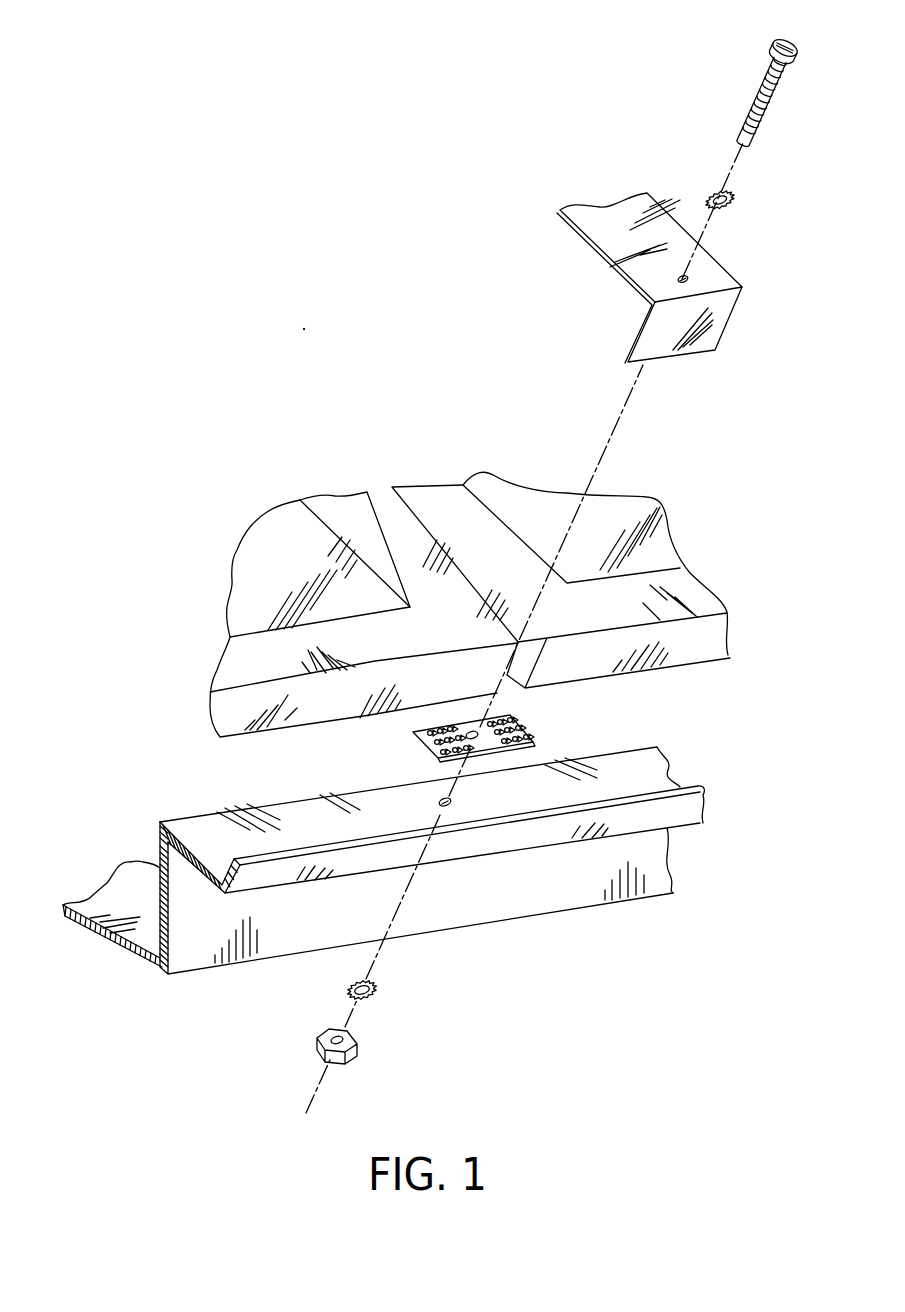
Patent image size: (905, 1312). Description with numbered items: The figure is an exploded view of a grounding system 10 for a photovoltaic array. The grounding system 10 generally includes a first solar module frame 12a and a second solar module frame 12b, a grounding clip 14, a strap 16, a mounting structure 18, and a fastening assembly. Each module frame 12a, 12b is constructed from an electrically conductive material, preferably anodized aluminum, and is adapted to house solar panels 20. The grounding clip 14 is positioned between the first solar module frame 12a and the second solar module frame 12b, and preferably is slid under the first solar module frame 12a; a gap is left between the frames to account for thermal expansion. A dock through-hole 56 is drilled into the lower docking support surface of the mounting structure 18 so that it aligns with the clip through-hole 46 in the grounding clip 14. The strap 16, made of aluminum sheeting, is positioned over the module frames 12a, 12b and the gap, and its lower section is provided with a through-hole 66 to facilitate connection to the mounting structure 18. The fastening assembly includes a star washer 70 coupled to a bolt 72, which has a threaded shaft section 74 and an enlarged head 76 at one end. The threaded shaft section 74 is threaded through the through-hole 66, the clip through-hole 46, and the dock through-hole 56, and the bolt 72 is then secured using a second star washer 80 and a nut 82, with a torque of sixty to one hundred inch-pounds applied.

The grounding system 10 is at (300, 322).
The first solar module frame 12a is at (247, 665).
The second solar module frame 12b is at (705, 640).
The grounding clip 14 is at (527, 718).
The strap 16 is at (708, 272).
The mounting structure 18 is at (132, 888).
The solar panels 20 is at (253, 567).
The clip through-hole 46 is at (478, 742).
The dock through-hole 56 is at (445, 808).
The through-hole of strap lower section 66 is at (681, 279).
The star washer 70 is at (707, 193).
The bolt 72 is at (714, 101).
The threaded shaft section 74 is at (773, 100).
The enlarged head 76 is at (797, 50).
The second star washer 80 is at (378, 992).
The nut 82 is at (355, 1057).